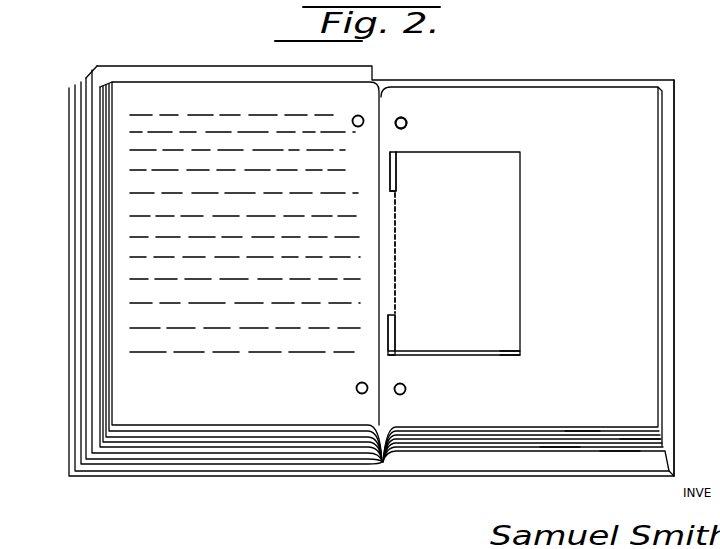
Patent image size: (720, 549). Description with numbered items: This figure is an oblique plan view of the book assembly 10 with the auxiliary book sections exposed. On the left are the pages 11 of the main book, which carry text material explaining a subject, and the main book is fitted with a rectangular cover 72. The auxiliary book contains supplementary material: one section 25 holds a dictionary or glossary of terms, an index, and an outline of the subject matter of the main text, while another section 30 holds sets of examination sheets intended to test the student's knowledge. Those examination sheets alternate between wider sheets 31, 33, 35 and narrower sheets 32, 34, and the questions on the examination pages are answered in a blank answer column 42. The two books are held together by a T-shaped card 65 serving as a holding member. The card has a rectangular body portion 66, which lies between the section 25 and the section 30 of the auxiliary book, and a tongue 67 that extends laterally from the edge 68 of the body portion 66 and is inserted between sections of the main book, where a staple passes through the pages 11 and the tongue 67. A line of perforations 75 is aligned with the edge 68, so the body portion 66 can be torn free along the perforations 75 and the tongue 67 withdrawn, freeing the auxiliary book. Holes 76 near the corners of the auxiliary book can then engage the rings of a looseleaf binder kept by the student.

The book assembly 10 is at (675, 27).
The pages 11 is at (84, 392).
The section 25 is at (186, 437).
The blank answer column 42 is at (264, 458).
The rectangular cover 72 is at (412, 461).
The section 30 is at (466, 449).
The narrower sheet 34 is at (558, 445).
The narrower sheet 32 is at (582, 432).
The wider sheet 35 is at (615, 447).
The wider sheet 33 is at (638, 440).
The wider sheet 31 is at (638, 432).
The body portion 66 is at (506, 300).
The line of perforations 75 is at (398, 273).
The edge 68 is at (389, 167).
The tongue 67 is at (388, 297).
The T-shaped card 65 is at (505, 366).
The holes 76 is at (406, 118).